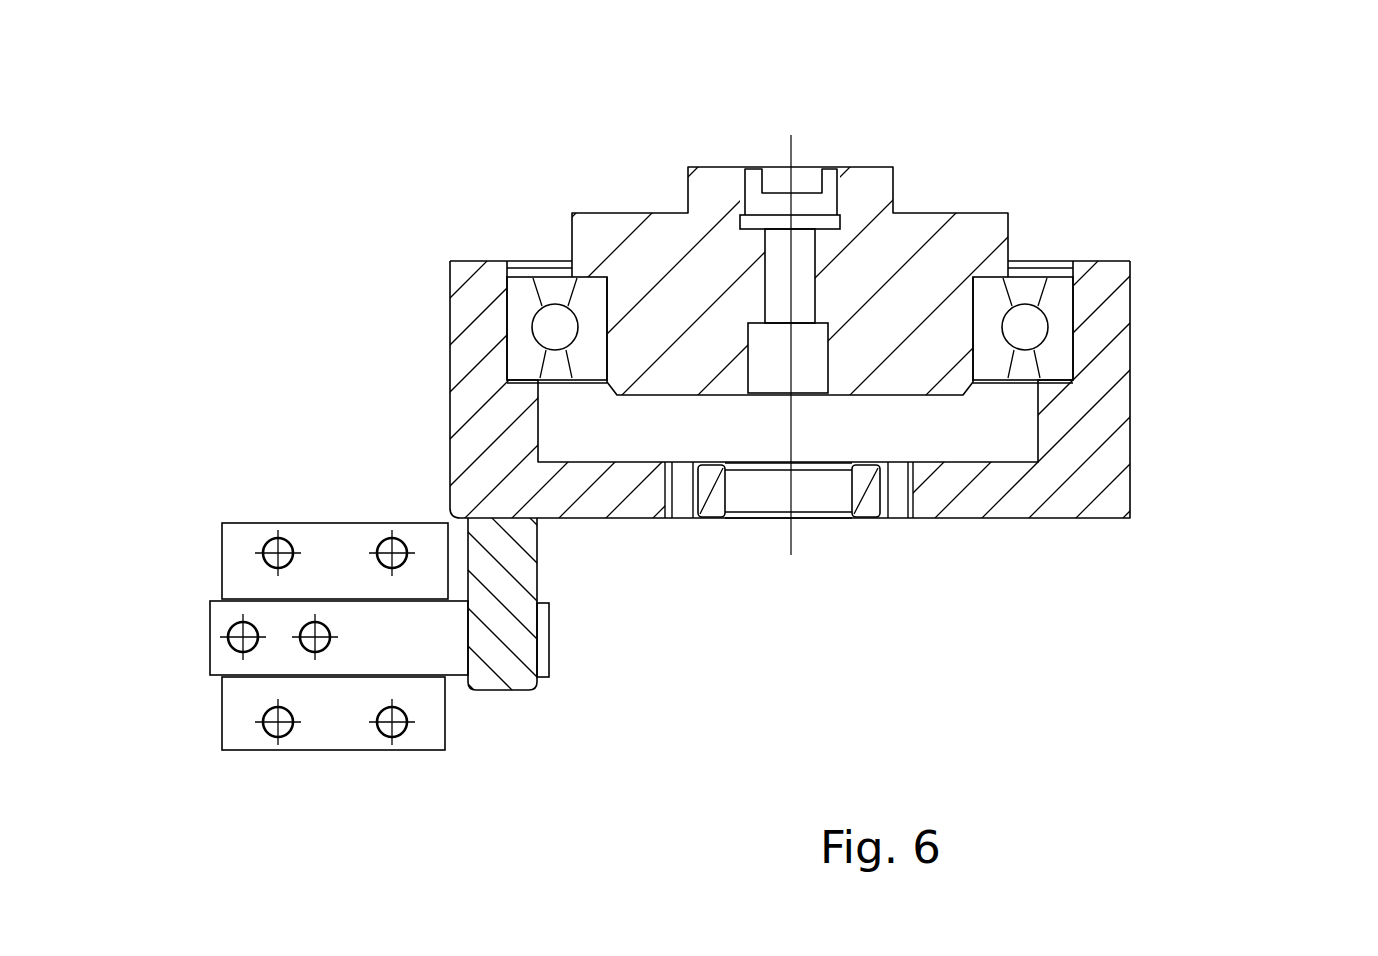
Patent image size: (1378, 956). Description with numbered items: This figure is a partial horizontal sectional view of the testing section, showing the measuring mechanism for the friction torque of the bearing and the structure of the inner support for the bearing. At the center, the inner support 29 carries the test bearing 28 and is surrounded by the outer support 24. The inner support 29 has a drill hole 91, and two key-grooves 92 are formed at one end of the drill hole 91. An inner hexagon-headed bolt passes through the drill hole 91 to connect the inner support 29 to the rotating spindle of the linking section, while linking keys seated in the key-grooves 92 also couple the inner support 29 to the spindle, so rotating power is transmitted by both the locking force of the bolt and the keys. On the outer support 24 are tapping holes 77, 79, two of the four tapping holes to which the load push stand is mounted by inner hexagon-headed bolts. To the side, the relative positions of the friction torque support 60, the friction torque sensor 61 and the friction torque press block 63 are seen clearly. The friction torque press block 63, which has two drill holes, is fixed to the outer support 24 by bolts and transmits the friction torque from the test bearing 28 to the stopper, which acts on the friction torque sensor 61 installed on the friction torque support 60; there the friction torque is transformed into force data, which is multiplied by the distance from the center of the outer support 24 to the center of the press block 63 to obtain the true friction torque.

The outer support 24 is at (1080, 450).
The test bearing 28 is at (555, 327).
The inner support 29 is at (943, 260).
The friction torque support 60 is at (232, 545).
The friction torque sensor 61 is at (425, 642).
The friction torque press block 63 is at (500, 637).
The tapping hole 77 is at (897, 430).
The tapping hole 79 is at (682, 430).
The drill hole 91 is at (790, 352).
The key-grooves 92 is at (745, 168).